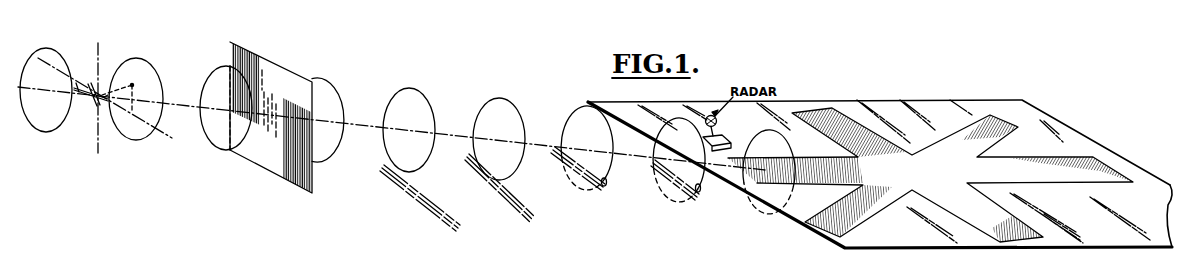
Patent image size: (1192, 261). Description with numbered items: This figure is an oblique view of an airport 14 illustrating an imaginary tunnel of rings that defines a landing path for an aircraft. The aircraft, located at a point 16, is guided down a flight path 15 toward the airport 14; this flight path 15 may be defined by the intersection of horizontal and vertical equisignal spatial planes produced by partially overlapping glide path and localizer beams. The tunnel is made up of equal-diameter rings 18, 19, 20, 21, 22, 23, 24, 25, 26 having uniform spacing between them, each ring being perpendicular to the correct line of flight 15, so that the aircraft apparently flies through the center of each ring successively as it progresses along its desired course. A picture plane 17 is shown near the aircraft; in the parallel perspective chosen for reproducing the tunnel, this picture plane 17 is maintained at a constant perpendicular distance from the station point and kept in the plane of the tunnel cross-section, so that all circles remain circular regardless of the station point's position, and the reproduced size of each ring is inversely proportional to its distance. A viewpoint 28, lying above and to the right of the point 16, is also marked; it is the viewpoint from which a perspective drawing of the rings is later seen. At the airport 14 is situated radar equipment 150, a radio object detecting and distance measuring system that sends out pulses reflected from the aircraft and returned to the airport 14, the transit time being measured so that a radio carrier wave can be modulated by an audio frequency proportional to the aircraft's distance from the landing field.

The airport 14 is at (906, 87).
The flight path 15 is at (471, 140).
The point 16 is at (90, 105).
The picture plane 17 is at (278, 65).
The ring 18 is at (42, 132).
The ring 19 is at (132, 140).
The ring 20 is at (230, 148).
The ring 21 is at (325, 160).
The ring 22 is at (409, 172).
The ring 23 is at (506, 179).
The ring 24 is at (605, 186).
The ring 25 is at (698, 191).
The ring 26 is at (797, 173).
The viewpoint 28 is at (132, 85).
The radar equipment 150 is at (718, 140).